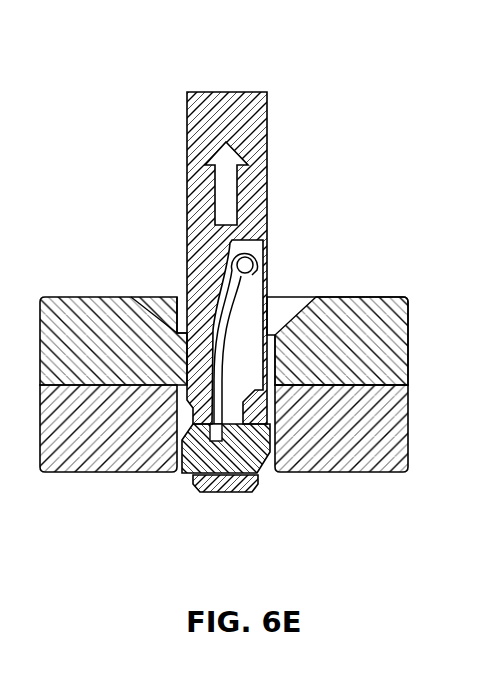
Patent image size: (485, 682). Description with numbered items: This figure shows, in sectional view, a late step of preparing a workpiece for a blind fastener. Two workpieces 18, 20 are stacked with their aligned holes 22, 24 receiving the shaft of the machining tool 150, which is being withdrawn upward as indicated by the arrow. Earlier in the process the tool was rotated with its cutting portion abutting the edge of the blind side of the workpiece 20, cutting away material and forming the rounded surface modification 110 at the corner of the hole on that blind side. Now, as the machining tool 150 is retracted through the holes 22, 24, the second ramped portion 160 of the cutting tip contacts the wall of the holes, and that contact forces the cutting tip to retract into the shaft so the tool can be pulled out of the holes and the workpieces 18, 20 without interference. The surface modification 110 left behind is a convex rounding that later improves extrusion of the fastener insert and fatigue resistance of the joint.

The workpiece 18 is at (410, 337).
The workpiece 20 is at (410, 425).
The hole 22 is at (176, 364).
The hole 24 is at (178, 432).
The surface modification 110 is at (152, 472).
The machining tool 150 is at (267, 163).
The second ramped portion 160 is at (269, 447).